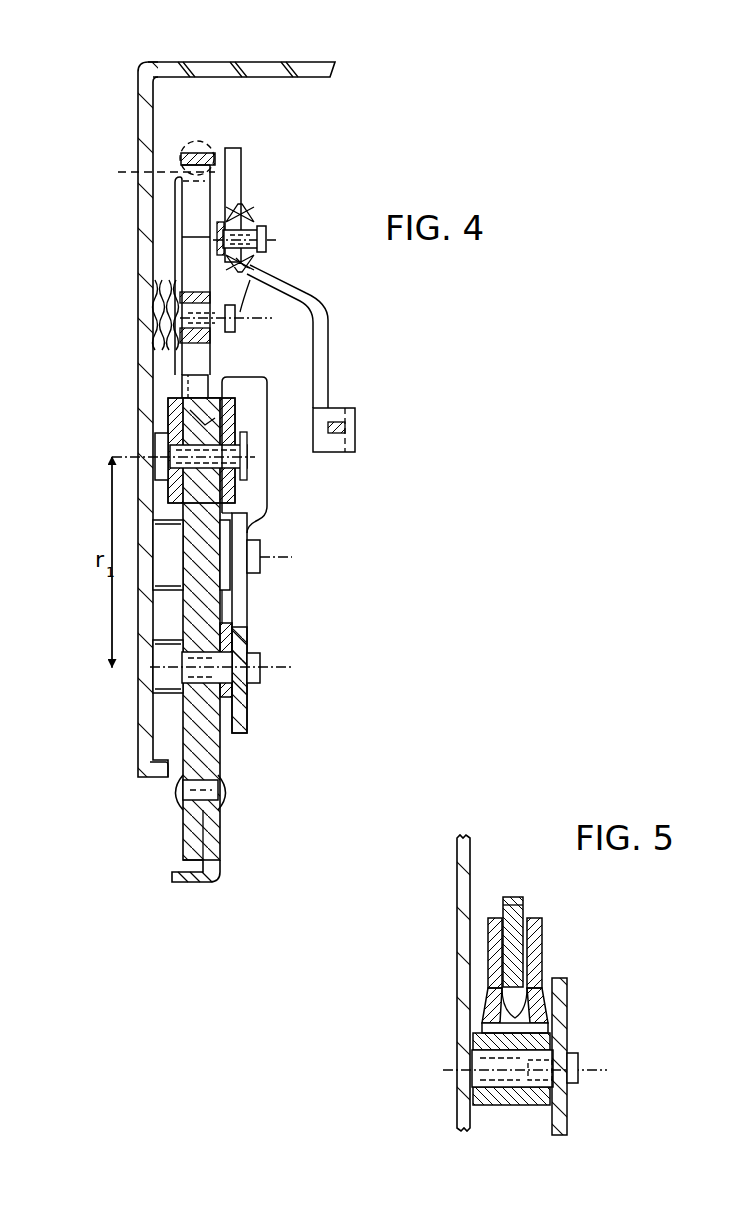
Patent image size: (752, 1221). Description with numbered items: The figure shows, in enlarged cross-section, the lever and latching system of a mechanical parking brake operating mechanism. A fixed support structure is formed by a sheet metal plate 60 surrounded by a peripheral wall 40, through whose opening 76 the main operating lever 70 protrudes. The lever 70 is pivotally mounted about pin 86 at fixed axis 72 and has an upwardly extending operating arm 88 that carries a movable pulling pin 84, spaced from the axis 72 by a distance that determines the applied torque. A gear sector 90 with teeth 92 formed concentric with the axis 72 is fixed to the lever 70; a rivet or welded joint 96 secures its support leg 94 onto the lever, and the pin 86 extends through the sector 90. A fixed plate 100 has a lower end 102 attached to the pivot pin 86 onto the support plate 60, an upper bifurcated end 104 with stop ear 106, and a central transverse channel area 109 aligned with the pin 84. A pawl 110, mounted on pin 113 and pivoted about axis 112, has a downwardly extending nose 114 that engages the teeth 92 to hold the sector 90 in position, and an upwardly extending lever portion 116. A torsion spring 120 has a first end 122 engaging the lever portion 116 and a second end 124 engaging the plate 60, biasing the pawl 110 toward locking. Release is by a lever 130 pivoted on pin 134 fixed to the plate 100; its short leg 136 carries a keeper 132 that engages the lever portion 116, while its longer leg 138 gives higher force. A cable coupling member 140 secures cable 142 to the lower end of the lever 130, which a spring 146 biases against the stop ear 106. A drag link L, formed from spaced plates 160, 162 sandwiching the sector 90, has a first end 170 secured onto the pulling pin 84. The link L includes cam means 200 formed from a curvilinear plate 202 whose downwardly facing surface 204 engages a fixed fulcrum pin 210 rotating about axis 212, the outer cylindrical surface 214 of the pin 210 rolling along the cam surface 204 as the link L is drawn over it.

In FIG. 4, the peripheral wall 40 is at (320, 70).
In FIG. 4, the sheet metal plate 60 is at (138, 396).
In FIG. 5, the sheet metal plate 60 is at (462, 965).
In FIG. 4, the main operating lever 70 is at (215, 884).
In FIG. 4, the fixed axis 72 is at (260, 668).
In FIG. 4, the opening 76 is at (170, 776).
In FIG. 4, the pulling pin 84 is at (248, 457).
In FIG. 4, the pin 86 is at (226, 643).
In FIG. 4, the operating arm 88 is at (250, 522).
In FIG. 4, the gear sector 90 is at (195, 620).
In FIG. 4, the teeth 92 is at (196, 373).
In FIG. 5, the teeth 92 is at (515, 897).
In FIG. 4, the support leg 94 is at (190, 835).
In FIG. 4, the rivet or welded joint 96 is at (230, 795).
In FIG. 4, the fixed plate 100 is at (252, 602).
In FIG. 5, the fixed plate 100 is at (570, 1001).
In FIG. 4, the lower end 102 is at (242, 720).
In FIG. 4, the upper bifurcated end 104 is at (238, 215).
In FIG. 4, the stop ear 106 is at (236, 148).
In FIG. 4, the transverse channel area 109 is at (268, 492).
In FIG. 4, the pawl 110 is at (210, 190).
In FIG. 4, the axis 112 is at (240, 314).
In FIG. 4, the pin 113 is at (250, 270).
In FIG. 4, the nose 114 is at (200, 385).
In FIG. 4, the lever portion 116 is at (197, 153).
In FIG. 4, the torsion spring 120 is at (162, 290).
In FIG. 4, the first end 122 is at (146, 171).
In FIG. 4, the second end 124 is at (162, 340).
In FIG. 4, the lever 130 is at (326, 346).
In FIG. 4, the keeper 132 is at (180, 157).
In FIG. 4, the pin 134 is at (266, 238).
In FIG. 4, the short leg 136 is at (258, 207).
In FIG. 4, the leg 138 is at (330, 387).
In FIG. 4, the cable coupling member 140 is at (350, 432).
In FIG. 4, the cable 142 is at (344, 428).
In FIG. 4, the spring 146 is at (196, 141).
In FIG. 4, the plate 160 is at (178, 440).
In FIG. 5, the plate 160 is at (490, 938).
In FIG. 4, the plate 162 is at (222, 442).
In FIG. 5, the plate 162 is at (545, 935).
In FIG. 4, the first end 170 is at (165, 478).
In FIG. 4, the cam means 200 is at (175, 530).
In FIG. 5, the cam means 200 is at (548, 978).
In FIG. 5, the curvilinear plate 202 is at (475, 1062).
In FIG. 5, the curvilinear surface 204 is at (485, 1076).
In FIG. 4, the fulcrum pin 210 is at (178, 566).
In FIG. 5, the fulcrum pin 210 is at (525, 1106).
In FIG. 4, the axis 212 is at (262, 557).
In FIG. 5, the axis 212 is at (597, 1072).
In FIG. 4, the outer cylindrical surface 214 is at (183, 578).
In FIG. 5, the outer cylindrical surface 214 is at (490, 1110).
In FIG. 4, the drag link L is at (170, 428).
In FIG. 5, the drag link L is at (545, 940).